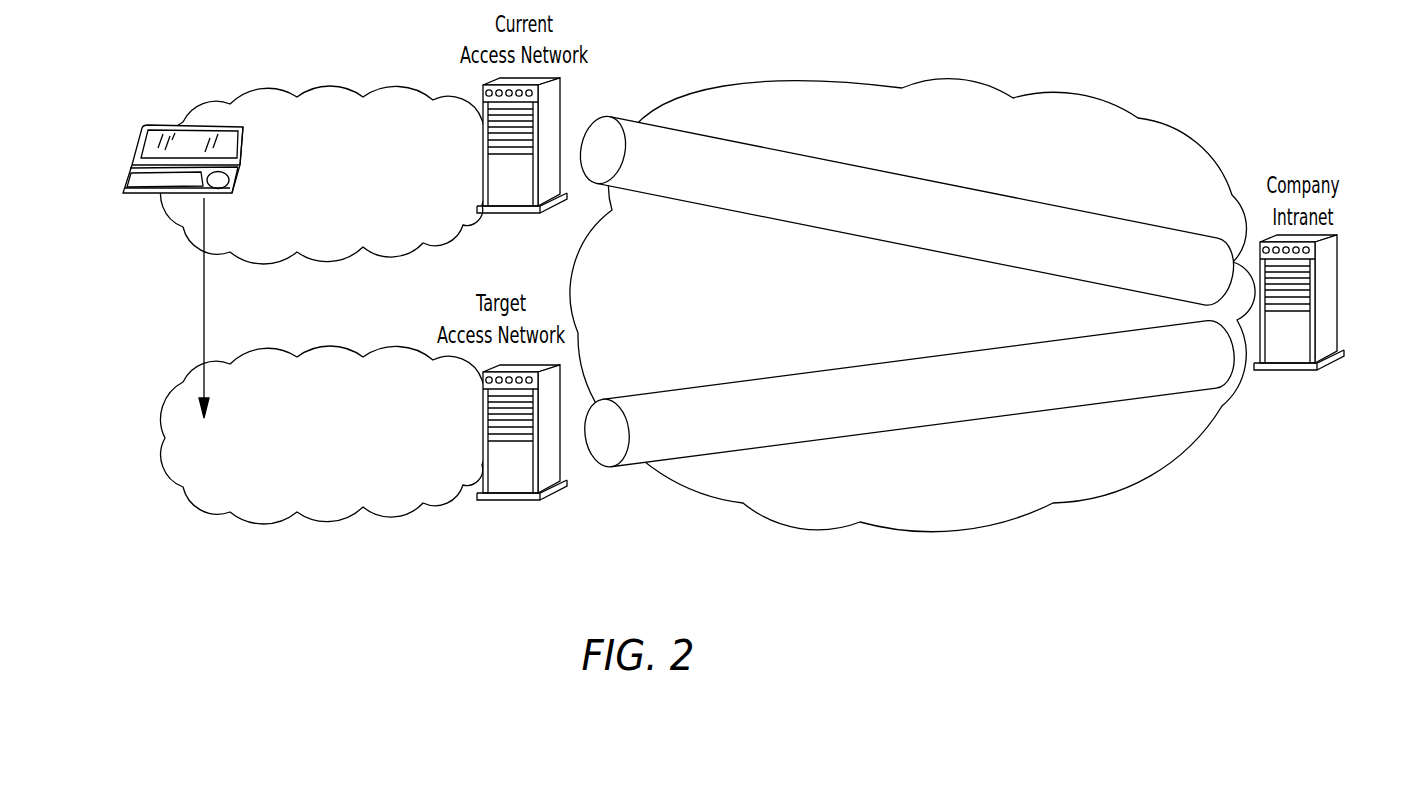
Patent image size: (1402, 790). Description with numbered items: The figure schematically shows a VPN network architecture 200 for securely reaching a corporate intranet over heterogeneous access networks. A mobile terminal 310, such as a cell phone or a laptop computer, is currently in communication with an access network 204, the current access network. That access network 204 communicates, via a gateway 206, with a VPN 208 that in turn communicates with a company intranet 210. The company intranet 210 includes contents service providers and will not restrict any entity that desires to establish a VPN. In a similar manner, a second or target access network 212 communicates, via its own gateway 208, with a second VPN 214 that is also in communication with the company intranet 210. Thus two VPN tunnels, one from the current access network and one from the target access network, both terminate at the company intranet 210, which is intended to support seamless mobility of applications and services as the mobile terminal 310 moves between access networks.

The VPN network architecture 200 is at (622, 576).
The access network 204 is at (323, 184).
The gateway 206 is at (508, 215).
The VPN 208 is at (945, 180).
The company intranet 210 is at (1340, 293).
The target access network 212 is at (322, 442).
The VPN 214 is at (835, 358).
The mobile terminal 310 is at (137, 145).